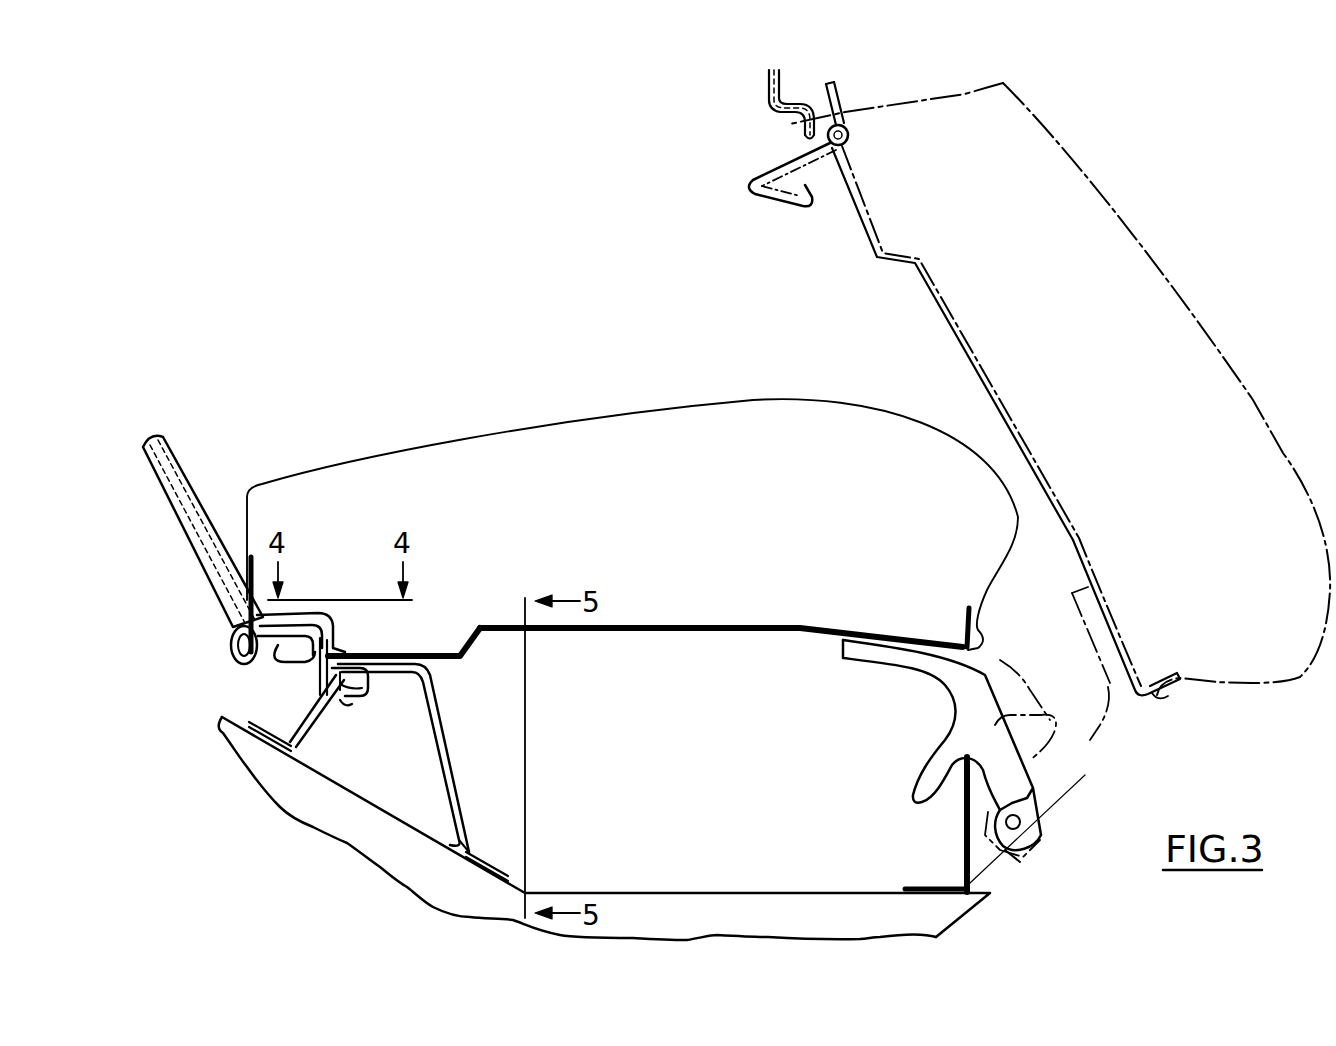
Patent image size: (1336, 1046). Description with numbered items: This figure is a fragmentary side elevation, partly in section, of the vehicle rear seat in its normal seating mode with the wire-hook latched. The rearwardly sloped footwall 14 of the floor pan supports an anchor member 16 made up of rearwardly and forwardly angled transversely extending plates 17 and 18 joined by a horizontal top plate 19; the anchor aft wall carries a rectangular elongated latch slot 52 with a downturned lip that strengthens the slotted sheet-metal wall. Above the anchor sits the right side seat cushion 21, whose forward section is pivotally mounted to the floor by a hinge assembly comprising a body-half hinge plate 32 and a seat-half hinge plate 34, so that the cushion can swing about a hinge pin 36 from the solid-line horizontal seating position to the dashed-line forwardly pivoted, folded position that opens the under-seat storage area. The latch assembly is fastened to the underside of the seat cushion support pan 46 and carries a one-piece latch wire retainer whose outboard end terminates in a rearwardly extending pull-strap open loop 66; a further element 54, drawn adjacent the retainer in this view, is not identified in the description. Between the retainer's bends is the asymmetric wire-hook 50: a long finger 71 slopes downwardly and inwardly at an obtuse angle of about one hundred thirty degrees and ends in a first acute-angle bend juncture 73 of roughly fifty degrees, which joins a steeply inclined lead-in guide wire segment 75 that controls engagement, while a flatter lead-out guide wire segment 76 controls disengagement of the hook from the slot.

The footwall 14 is at (245, 757).
The anchor member 16 is at (448, 733).
The rearwardly angled transversely extending plate 17 is at (308, 720).
The forwardly angled transversely extending plate 18 is at (464, 822).
The horizontal top plate 19 is at (408, 656).
The right side seat cushion 21 is at (752, 400).
The body-half hinge plate 32 is at (1013, 862).
The seat-half hinge plate 34 is at (1100, 675).
The hinge pin 36 is at (1010, 820).
The seat cushion support pan 46 is at (745, 632).
The wire-hook 50 is at (358, 720).
The latch slot 52 is at (185, 478).
The mounting bar 54 is at (333, 613).
The pull-strap open loop 66 is at (222, 652).
The long finger 71 is at (320, 666).
The first acute-angle bend juncture 73 is at (352, 710).
The lead-in guide wire segment 75 is at (362, 690).
The lead-out guide wire segment 76 is at (350, 675).